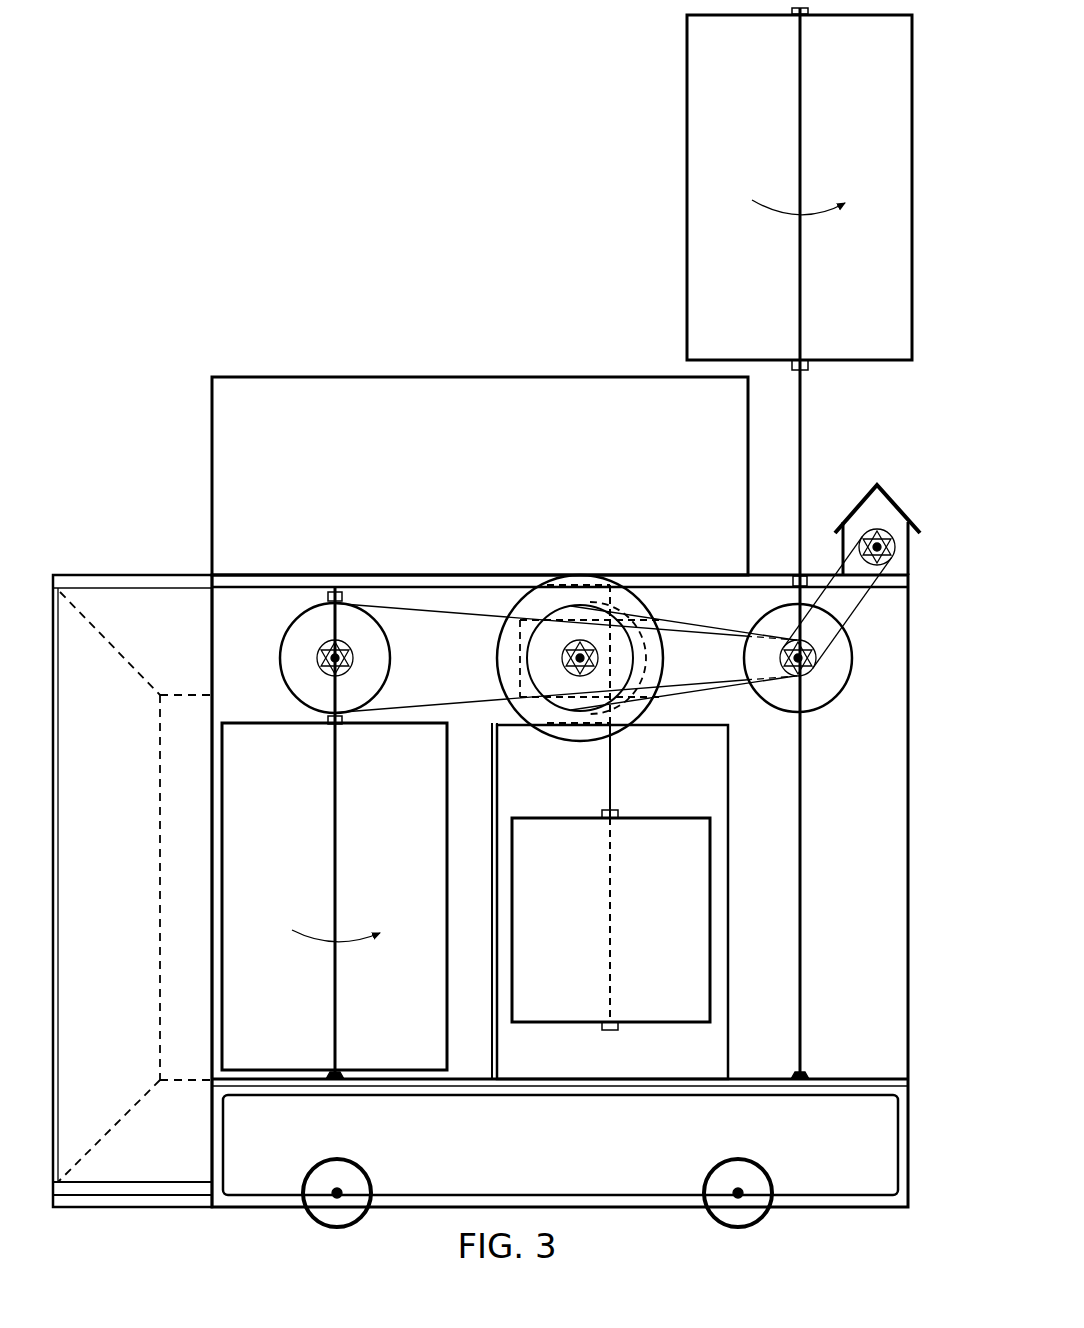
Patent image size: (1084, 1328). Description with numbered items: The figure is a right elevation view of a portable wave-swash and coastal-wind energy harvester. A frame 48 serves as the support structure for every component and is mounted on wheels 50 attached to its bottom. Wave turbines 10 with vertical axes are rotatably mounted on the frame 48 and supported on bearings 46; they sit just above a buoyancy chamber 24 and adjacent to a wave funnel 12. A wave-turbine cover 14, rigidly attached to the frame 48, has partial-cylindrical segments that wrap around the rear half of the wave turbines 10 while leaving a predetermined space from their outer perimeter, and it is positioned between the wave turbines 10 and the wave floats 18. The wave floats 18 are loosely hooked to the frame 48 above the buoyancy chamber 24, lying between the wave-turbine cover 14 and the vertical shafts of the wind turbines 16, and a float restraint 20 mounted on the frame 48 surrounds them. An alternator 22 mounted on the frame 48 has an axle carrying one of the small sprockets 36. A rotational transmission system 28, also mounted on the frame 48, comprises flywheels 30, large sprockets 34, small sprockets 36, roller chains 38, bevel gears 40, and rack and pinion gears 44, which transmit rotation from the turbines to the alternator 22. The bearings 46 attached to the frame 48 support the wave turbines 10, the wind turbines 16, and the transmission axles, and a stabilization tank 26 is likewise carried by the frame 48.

The wave turbine 10 is at (224, 1040).
The wave funnel 12 is at (150, 578).
The wave-turbine cover 14 is at (492, 872).
The wind turbine 16 is at (687, 235).
The wave float 18 is at (712, 975).
The float restraint 20 is at (728, 895).
The alternator 22 is at (882, 513).
The buoyancy chamber 24 is at (750, 1079).
The stabilization tank 26 is at (210, 440).
The rotational transmission system 28 is at (447, 662).
The flywheel 30 is at (290, 607).
The large sprocket 34 is at (560, 710).
The small sprocket 36 is at (874, 536).
The roller chain 38 is at (430, 611).
The bevel gear 40 is at (332, 652).
The rack and pinion gear 44 is at (603, 655).
The bearing 46 is at (345, 1076).
The frame 48 is at (202, 623).
The wheel 50 is at (360, 1172).